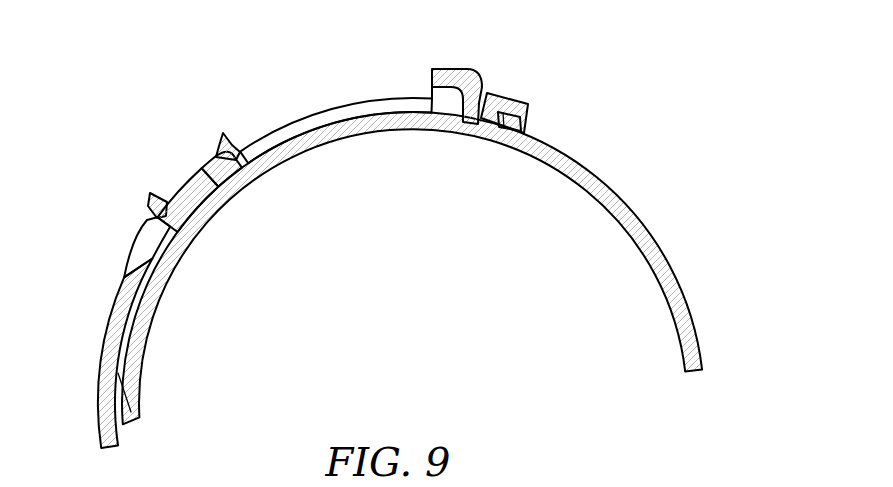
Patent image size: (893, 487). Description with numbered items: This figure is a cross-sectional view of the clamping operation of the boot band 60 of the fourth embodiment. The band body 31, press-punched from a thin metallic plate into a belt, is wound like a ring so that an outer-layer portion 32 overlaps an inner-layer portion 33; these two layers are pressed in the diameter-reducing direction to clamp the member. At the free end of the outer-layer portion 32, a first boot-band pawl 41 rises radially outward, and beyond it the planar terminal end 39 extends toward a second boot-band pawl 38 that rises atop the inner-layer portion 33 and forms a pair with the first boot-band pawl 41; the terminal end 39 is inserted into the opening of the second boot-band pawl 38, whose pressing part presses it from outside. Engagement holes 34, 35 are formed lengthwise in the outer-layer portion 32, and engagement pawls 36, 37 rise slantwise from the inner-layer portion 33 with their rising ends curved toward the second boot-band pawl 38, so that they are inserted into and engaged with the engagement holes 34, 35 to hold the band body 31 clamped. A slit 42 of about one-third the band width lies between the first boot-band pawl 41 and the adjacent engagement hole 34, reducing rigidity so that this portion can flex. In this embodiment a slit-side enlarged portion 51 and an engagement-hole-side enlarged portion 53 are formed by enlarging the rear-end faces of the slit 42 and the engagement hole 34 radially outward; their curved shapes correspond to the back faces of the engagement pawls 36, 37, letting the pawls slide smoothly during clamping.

The band body 31 is at (452, 268).
The outer-layer portion 32 is at (336, 98).
The inner-layer portion 33 is at (388, 126).
The engagement hole 34 is at (182, 202).
The engagement hole 35 is at (136, 273).
The engagement pawl 36 is at (203, 170).
The engagement pawl 37 is at (145, 230).
The second boot-band pawl 38 is at (514, 101).
The terminal end 39 is at (494, 131).
The first boot-band pawl 41 is at (453, 70).
The slit 42 is at (357, 108).
The slit-side enlarged portion 51 is at (220, 138).
The engagement-hole-side enlarged portion 53 is at (152, 200).
The boot band 60 is at (412, 230).